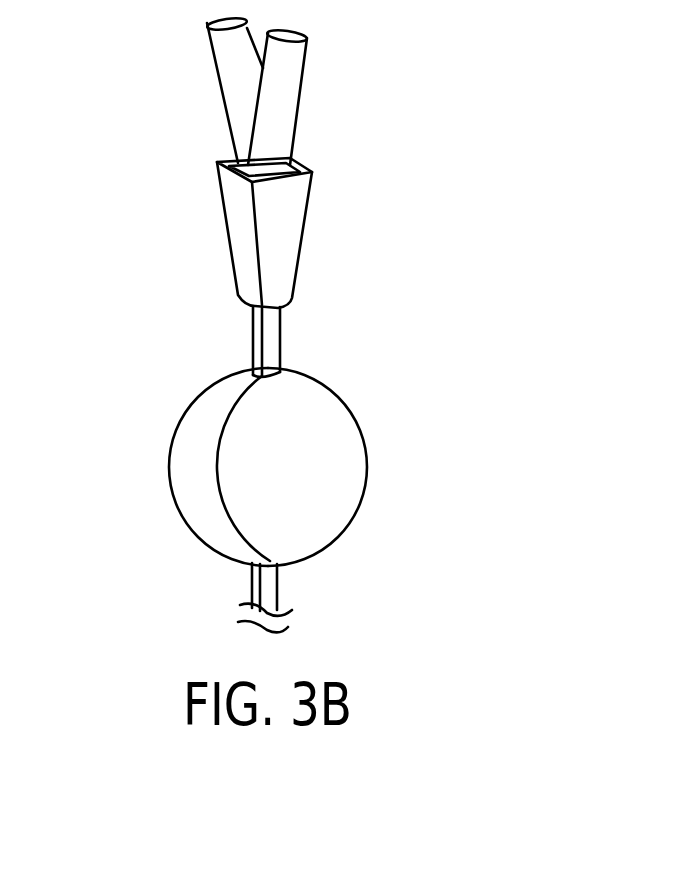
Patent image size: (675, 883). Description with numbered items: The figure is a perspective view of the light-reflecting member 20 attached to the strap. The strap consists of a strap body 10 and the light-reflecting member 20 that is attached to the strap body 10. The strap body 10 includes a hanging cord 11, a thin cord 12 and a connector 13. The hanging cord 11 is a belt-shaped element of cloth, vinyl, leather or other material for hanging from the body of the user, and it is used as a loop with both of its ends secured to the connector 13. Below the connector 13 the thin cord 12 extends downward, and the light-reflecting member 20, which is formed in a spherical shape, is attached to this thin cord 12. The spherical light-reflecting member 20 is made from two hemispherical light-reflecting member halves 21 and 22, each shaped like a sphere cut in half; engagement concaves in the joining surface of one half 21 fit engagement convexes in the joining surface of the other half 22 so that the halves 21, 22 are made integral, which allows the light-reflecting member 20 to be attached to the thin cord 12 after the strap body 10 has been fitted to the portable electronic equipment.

The strap body 10 is at (362, 196).
The hanging cord 11 is at (297, 110).
The thin cord 12 is at (341, 308).
The connector 13 is at (308, 212).
The light-reflecting member 20 is at (244, 442).
The light-reflecting member half 21 is at (340, 480).
The light-reflecting member half 22 is at (169, 452).